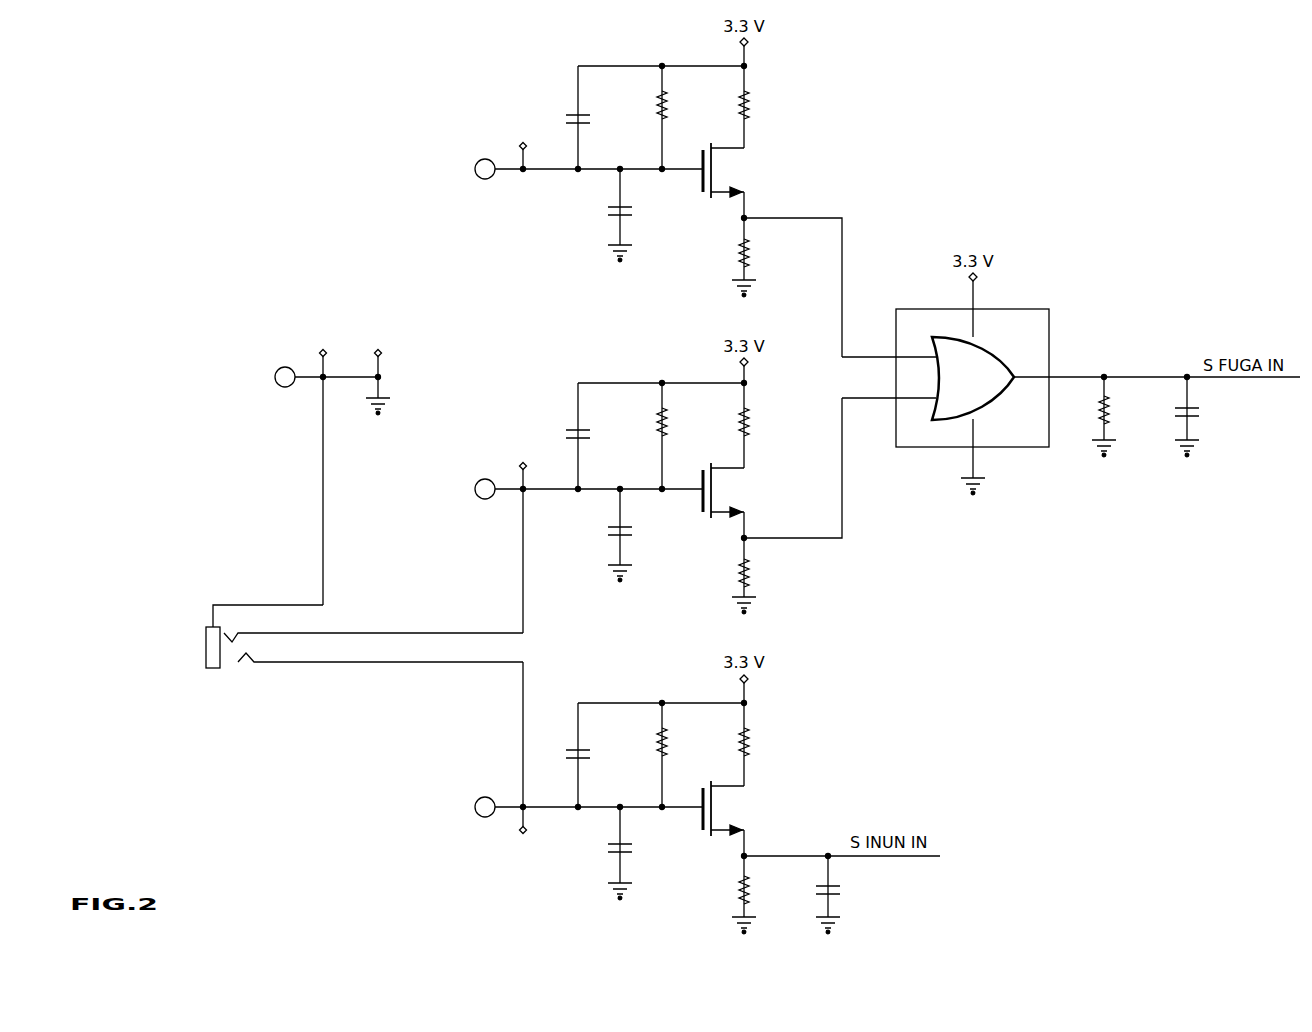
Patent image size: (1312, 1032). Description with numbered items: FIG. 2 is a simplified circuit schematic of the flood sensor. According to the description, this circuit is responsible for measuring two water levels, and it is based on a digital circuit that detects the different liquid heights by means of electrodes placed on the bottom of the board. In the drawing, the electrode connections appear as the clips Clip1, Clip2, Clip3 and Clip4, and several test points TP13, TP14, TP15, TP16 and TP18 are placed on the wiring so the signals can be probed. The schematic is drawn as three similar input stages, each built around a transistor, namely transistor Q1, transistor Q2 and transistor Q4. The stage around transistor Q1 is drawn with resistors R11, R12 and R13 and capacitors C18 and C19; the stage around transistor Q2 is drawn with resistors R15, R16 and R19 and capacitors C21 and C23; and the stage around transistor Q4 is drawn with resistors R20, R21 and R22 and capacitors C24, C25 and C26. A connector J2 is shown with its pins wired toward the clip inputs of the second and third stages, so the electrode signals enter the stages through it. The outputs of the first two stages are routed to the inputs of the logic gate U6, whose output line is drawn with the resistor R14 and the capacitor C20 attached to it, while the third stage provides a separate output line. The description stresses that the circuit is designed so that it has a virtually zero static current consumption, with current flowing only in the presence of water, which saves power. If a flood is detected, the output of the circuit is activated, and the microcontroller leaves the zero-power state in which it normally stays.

The test clip S7061-42R Clip1 is at (437, 169).
The test clip S7061-42R Clip2 is at (237, 378).
The test clip S7061-42R Clip3 is at (437, 489).
The test clip S1741-46R Clip4 is at (437, 807).
The test point TP13 is at (522, 144).
The test point TP14 is at (322, 466).
The test point TP15 is at (377, 371).
The test point TP16 is at (522, 536).
The test point TP18 is at (522, 760).
The capacitor 1uF C18 is at (597, 119).
The capacitor 10nF C19 is at (643, 215).
The capacitor 22pF C20 is at (1209, 417).
The capacitor 1uF C21 is at (597, 436).
The capacitor 10uF C23 is at (643, 535).
The capacitor 1uF C24 is at (597, 756).
The capacitor 10nF C25 is at (643, 853).
The capacitor 22pF C26 is at (850, 895).
The resistor 1K3 R11 is at (764, 107).
The resistor 100K R12 is at (688, 117).
The resistor 100K R13 is at (766, 244).
The resistor 100K R14 is at (1127, 417).
The resistor 1K3 R15 is at (764, 425).
The resistor 100K R16 is at (688, 436).
The resistor 100K R19 is at (766, 563).
The resistor 1K3 R20 is at (764, 744).
The resistor 100K R21 is at (688, 755).
The resistor 100K R22 is at (766, 882).
The MOSFET Si1013R Q1 is at (760, 170).
The MOSFET Si1013R Q2 is at (760, 490).
The MOSFET Si1013R Q4 is at (760, 808).
The OR gate NC7S32P5X U6 is at (1018, 390).
The audio jack connector STX-2500-3NTR J2 is at (355, 642).